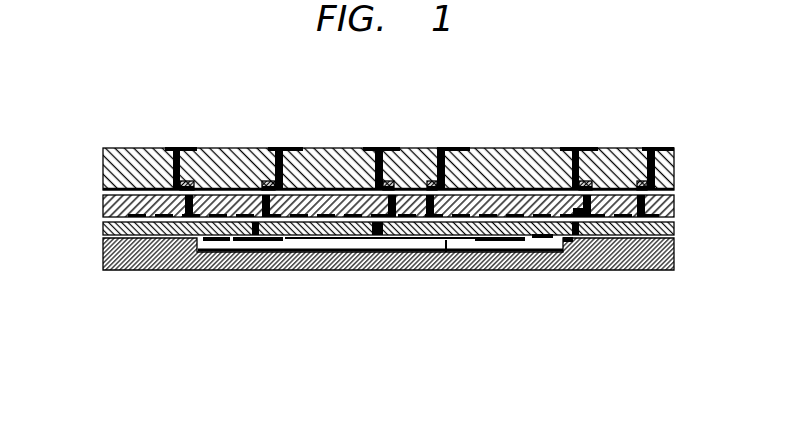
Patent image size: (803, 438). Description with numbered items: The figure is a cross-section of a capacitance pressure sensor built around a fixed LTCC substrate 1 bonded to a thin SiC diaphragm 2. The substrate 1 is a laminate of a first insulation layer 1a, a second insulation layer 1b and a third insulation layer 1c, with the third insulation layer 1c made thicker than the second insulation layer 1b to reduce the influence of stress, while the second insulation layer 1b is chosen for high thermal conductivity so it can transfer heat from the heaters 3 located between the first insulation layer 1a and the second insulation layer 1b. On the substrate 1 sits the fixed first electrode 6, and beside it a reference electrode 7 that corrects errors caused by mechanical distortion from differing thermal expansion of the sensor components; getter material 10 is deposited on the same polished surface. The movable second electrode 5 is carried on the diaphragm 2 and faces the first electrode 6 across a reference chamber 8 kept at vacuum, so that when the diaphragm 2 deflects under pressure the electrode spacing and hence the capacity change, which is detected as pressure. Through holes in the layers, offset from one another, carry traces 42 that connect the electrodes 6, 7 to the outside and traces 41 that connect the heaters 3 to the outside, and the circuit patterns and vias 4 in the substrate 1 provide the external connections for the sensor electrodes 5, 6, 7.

The LTCC substrate 1 is at (378, 193).
The first insulation layer 1a is at (103, 231).
The second insulation layer 1b is at (103, 206).
The third insulation layer 1c is at (103, 166).
The diaphragm 2 is at (674, 255).
The heater 3 is at (210, 208).
The vias 4 is at (173, 147).
The trace 41 is at (197, 147).
The trace 42 is at (300, 147).
The second electrode 5 is at (406, 251).
The first electrode 6 is at (371, 235).
The reference electrode 7 is at (268, 241).
The reference chamber 8 is at (446, 252).
The getter material 10 is at (216, 241).